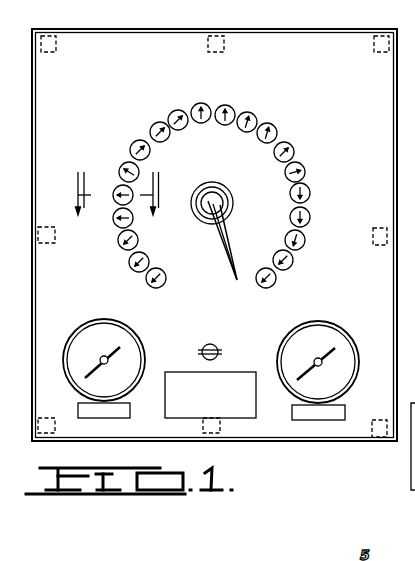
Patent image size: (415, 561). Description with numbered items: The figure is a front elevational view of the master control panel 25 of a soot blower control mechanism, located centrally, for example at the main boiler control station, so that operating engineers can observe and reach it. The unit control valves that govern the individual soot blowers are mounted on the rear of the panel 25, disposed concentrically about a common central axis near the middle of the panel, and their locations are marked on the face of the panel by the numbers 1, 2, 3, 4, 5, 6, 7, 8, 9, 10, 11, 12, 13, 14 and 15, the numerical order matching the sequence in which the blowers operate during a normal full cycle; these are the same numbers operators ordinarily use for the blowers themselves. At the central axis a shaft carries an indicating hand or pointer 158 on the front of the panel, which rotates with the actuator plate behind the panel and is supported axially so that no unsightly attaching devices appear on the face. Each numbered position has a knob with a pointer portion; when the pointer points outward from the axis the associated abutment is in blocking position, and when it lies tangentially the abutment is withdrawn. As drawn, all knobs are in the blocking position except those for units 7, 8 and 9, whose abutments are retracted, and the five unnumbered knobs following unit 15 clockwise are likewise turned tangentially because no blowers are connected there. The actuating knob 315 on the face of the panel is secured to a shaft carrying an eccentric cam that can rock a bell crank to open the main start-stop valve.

The master control panel 25 is at (320, 38).
The indicating hand or pointer 158 is at (225, 228).
The actuating knob 315 is at (216, 345).
The unit control valve position 8 is at (119, 163).
The unit control valve position 1 is at (154, 283).
The unit control valve position 2 is at (133, 265).
The unit control valve position 3 is at (122, 243).
The unit control valve position 4 is at (116, 218).
The unit control valve position 5 is at (117, 194).
The unit control valve position 6 is at (123, 169).
The unit control valve position 7 is at (136, 145).
The unit control valve position 9 is at (178, 113).
The unit control valve position 10 is at (201, 107).
The unit control valve position 11 is at (225, 108).
The unit control valve position 12 is at (248, 115).
The unit control valve position 13 is at (271, 125).
The unit control valve position 14 is at (291, 146).
The unit control valve position 15 is at (304, 169).